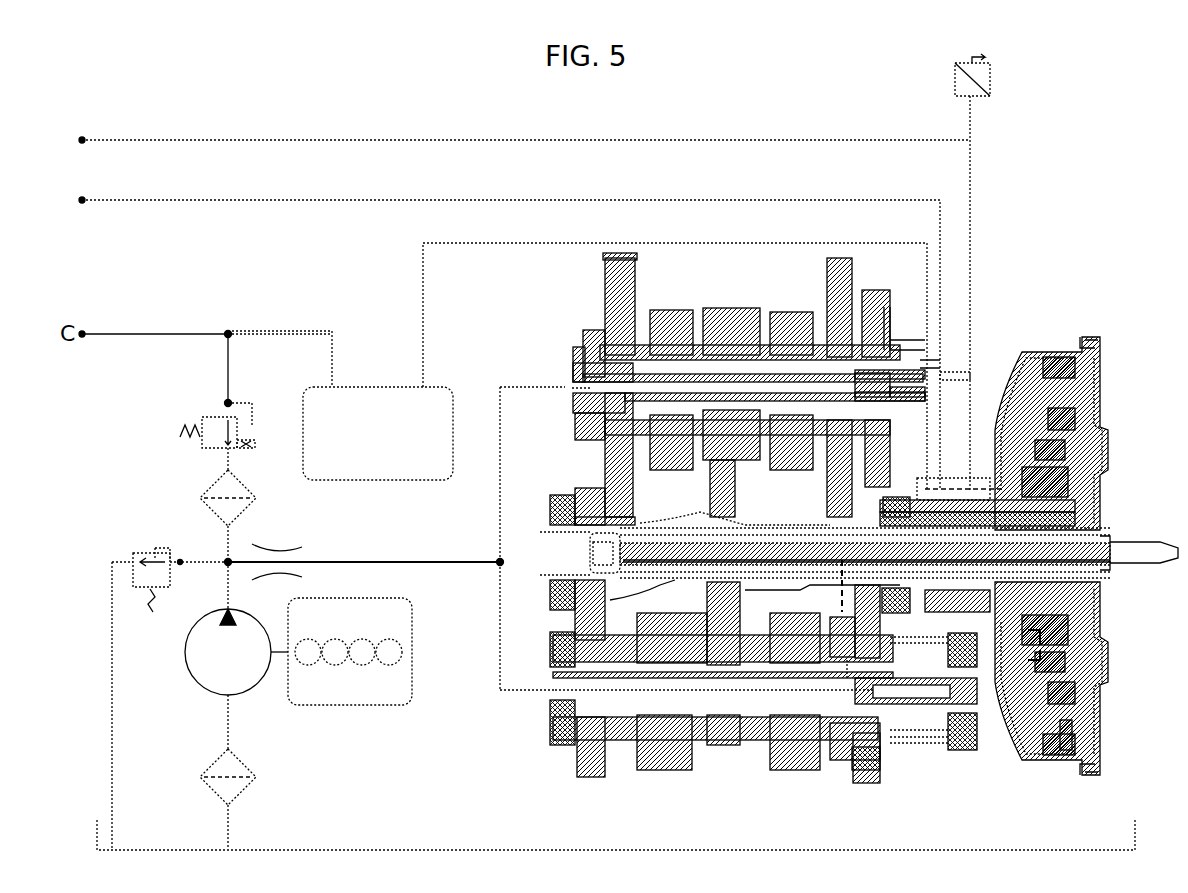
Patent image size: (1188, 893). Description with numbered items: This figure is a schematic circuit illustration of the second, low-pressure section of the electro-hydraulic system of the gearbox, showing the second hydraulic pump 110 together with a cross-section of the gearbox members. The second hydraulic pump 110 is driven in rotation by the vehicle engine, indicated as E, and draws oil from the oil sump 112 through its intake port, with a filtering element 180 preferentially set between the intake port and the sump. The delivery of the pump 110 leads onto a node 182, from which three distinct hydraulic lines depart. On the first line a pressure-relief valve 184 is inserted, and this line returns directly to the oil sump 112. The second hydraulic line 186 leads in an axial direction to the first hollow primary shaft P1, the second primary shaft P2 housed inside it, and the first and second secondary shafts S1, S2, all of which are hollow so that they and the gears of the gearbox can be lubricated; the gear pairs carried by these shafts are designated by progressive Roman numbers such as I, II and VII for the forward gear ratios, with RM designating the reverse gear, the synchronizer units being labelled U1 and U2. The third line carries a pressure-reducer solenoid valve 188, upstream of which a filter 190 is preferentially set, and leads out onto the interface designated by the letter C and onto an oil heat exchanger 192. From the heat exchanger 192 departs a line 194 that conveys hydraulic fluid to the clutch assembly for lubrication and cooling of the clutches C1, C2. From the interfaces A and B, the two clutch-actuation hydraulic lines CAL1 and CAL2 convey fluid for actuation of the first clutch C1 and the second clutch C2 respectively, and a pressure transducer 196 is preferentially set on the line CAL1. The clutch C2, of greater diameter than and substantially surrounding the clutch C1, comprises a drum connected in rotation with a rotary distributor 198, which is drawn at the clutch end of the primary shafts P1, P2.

The second hydraulic pump 110 is at (200, 670).
The oil sump 112 is at (470, 848).
The filtering element 180 is at (240, 785).
The node 182 is at (228, 560).
The pressure-relief valve 184 is at (133, 556).
The second hydraulic line 186 is at (415, 560).
The pressure-reducer solenoid valve 188 is at (212, 415).
The filter 190 is at (212, 488).
The heat exchanger 192 is at (378, 433).
The line 194 is at (425, 296).
The pressure transducer 196 is at (988, 93).
The rotary distributor 198 is at (985, 500).
The clutch-actuation hydraulic line CAL1 is at (200, 140).
The clutch-actuation hydraulic line CAL2 is at (263, 200).
The internal combustion engine E is at (388, 688).
The reverse gear RM is at (748, 325).
The first forward gear I is at (749, 459).
The second forward gear II is at (866, 775).
The seventh forward gear VII is at (770, 696).
The first synchronizer hub U1 is at (907, 363).
The first secondary shaft S1 is at (865, 369).
The first hollow primary shaft P1 is at (915, 522).
The second primary shaft P2 is at (677, 576).
The second synchronizer hub U2 is at (923, 718).
The second secondary shaft S2 is at (872, 718).
The first clutch C1 is at (1075, 680).
The second clutch C2 is at (1082, 742).